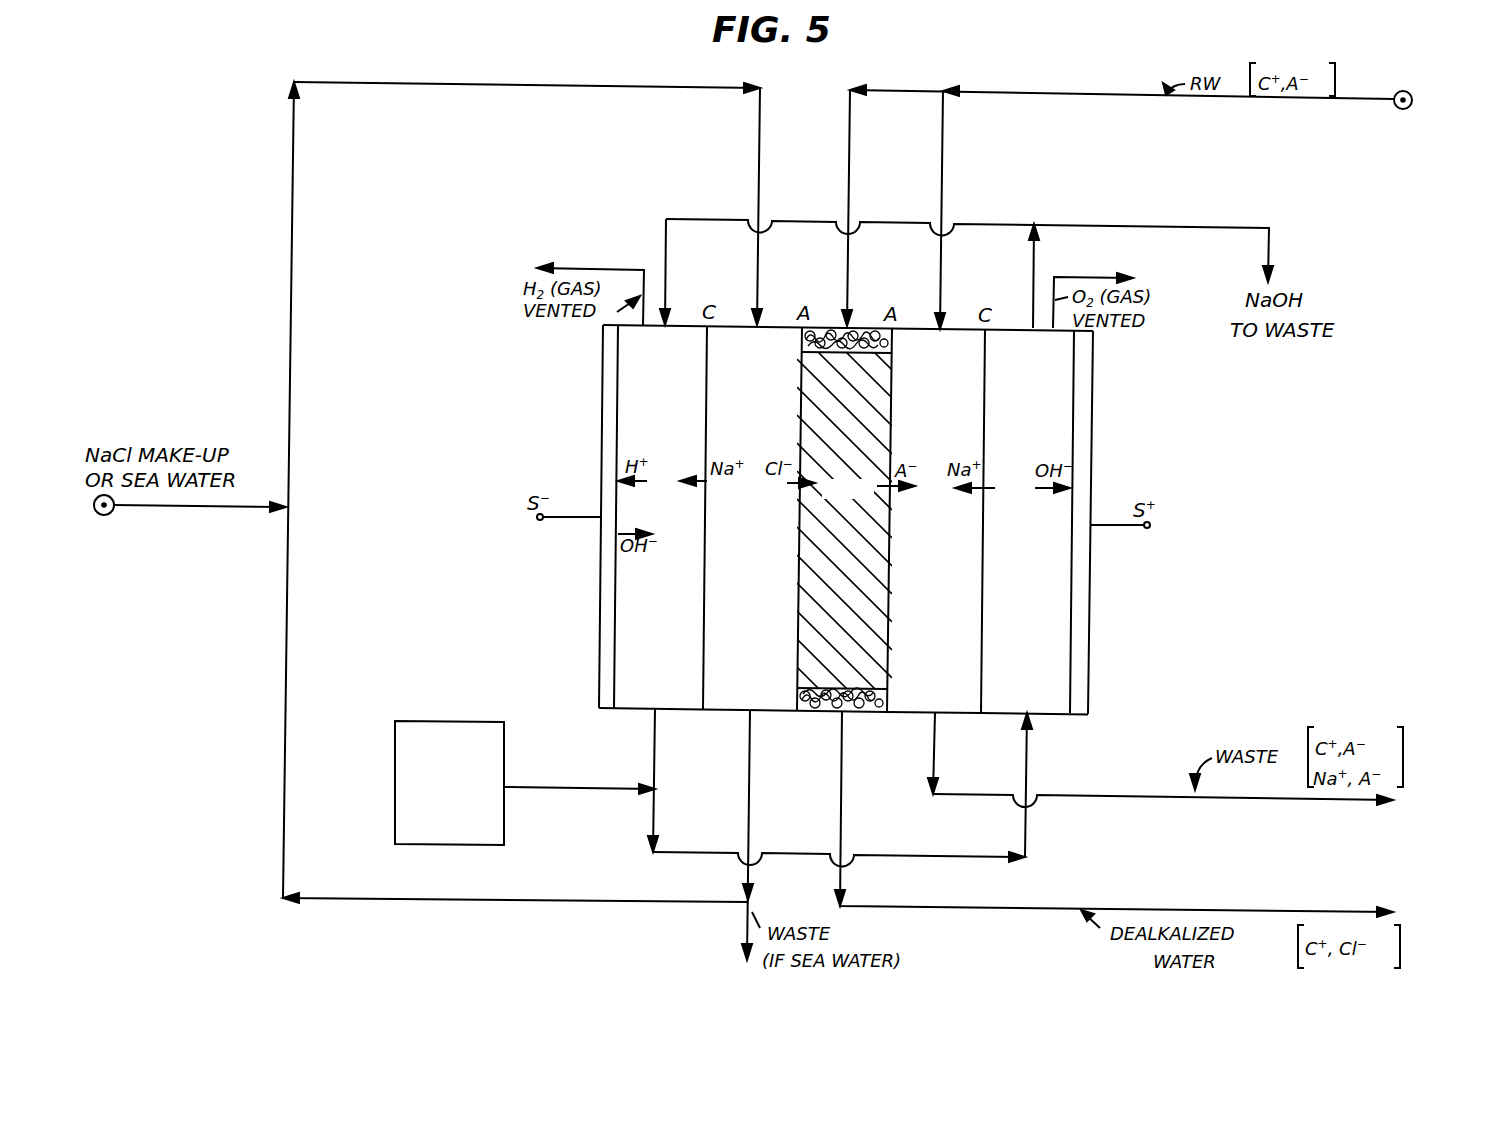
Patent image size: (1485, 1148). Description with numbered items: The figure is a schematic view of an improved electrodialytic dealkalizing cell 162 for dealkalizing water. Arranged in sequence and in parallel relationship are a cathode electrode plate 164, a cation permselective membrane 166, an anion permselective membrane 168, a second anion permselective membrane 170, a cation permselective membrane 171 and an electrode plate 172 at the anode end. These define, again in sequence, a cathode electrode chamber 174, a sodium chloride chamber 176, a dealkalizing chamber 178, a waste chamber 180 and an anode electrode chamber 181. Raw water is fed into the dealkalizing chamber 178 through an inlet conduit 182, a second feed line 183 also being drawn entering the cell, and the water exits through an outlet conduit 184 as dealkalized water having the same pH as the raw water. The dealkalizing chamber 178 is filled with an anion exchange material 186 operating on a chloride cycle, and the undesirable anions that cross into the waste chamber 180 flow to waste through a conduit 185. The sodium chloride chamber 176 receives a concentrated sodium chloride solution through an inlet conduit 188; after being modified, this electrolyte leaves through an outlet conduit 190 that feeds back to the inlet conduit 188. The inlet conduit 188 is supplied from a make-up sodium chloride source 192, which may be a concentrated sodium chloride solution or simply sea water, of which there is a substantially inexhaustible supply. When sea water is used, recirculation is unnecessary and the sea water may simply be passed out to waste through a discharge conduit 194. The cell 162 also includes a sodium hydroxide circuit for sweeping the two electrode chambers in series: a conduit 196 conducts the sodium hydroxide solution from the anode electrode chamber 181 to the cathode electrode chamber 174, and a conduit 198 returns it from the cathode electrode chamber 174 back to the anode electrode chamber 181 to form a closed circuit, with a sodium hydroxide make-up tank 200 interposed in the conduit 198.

The dealkalizing cell 162 is at (1167, 626).
The cathode electrode plate 164 is at (600, 638).
The cation permselective membrane 166 is at (703, 637).
The anion permselective membrane 168 is at (797, 620).
The second anion permselective membrane 170 is at (887, 588).
The cation permselective membrane 171 is at (981, 612).
The electrode plate 172 is at (1088, 663).
The cathode electrode chamber 174 is at (635, 697).
The sodium chloride chamber 176 is at (725, 697).
The dealkalizing chamber 178 is at (828, 704).
The waste chamber 180 is at (913, 703).
The anode electrode chamber 181 is at (1045, 702).
The inlet conduit 182 is at (850, 110).
The raw water feed line 183 is at (943, 176).
The outlet conduit 184 is at (1023, 905).
The conduit 185 is at (1097, 793).
The anion exchange material 186 is at (872, 408).
The inlet conduit 188 is at (437, 85).
The outlet conduit 190 is at (597, 903).
The make-up sodium chloride source 192 is at (195, 508).
The discharge conduit 194 is at (743, 923).
The conduit 196 is at (1033, 280).
The conduit 198 is at (912, 860).
The sodium hydroxide make-up tank 200 is at (493, 840).